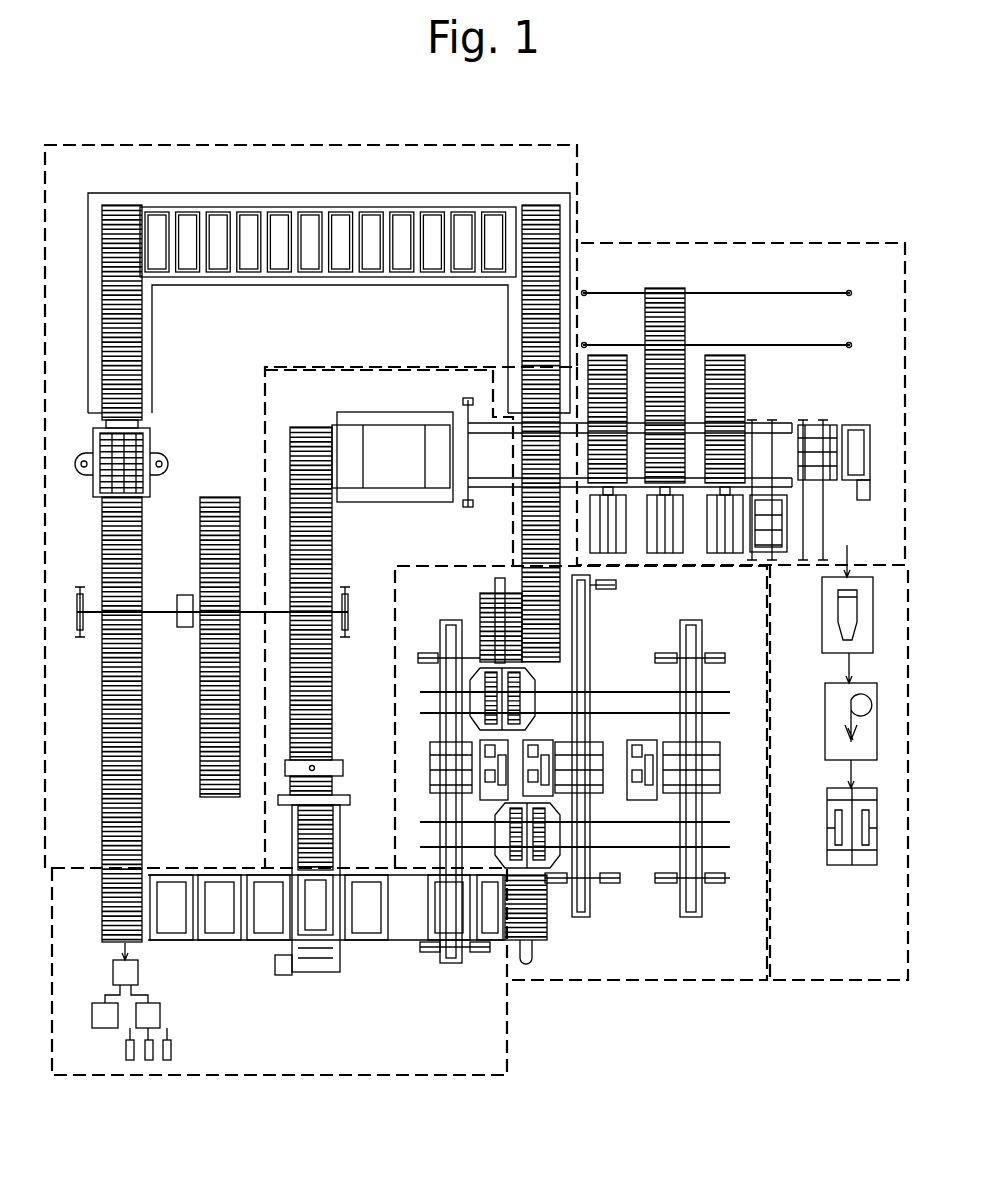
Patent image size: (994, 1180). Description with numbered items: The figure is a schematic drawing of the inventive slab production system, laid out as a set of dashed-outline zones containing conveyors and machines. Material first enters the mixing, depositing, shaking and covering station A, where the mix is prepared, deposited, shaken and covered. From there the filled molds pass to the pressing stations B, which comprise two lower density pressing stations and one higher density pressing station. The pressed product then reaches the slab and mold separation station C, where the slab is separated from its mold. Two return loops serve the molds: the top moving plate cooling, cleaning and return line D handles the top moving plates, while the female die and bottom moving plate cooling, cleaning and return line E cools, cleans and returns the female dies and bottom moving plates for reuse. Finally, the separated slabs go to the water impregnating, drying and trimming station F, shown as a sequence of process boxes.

The mixing, depositing, shaking and covering station A is at (299, 971).
The pressing stations B is at (581, 773).
The slab and mold separation station C is at (741, 404).
The top moving plate cooling, cleaning and return line D is at (528, 672).
The female die and bottom moving plate cooling, cleaning and return line E is at (311, 543).
The water impregnating, drying and trimming station F is at (839, 762).